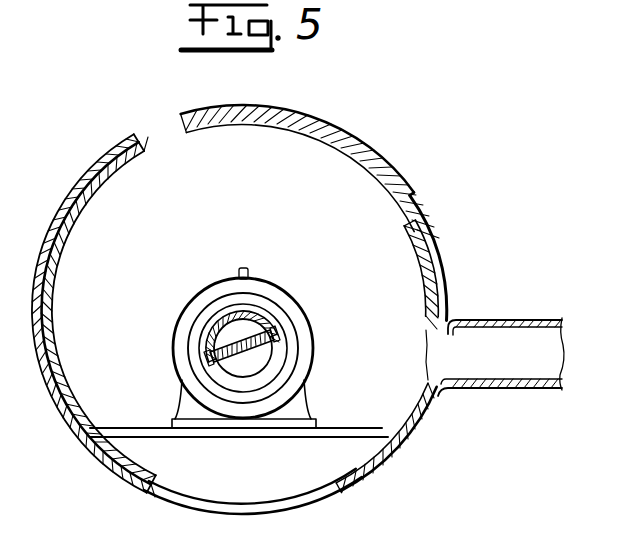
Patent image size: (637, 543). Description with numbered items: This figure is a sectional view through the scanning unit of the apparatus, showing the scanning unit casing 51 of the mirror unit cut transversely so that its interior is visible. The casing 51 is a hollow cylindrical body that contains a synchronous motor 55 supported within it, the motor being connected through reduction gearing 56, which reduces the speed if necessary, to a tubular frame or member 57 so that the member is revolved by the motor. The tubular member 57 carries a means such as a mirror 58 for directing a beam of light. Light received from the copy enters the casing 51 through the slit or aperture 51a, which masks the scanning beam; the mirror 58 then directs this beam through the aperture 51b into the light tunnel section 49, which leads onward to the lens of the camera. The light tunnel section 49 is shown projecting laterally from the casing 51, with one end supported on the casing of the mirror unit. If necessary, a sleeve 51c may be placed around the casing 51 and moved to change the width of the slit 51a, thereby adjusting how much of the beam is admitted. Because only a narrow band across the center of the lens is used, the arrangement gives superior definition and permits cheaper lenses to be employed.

The light tunnel section 49 is at (487, 319).
The scanning unit casing 51 is at (140, 133).
The aperture 51a is at (301, 500).
The aperture 51b is at (427, 347).
The sleeve 51c is at (283, 112).
The synchronous motor 55 is at (307, 317).
The reduction gearing 56 is at (258, 306).
The tubular frame or member 57 is at (207, 341).
The mirror 58 is at (242, 348).